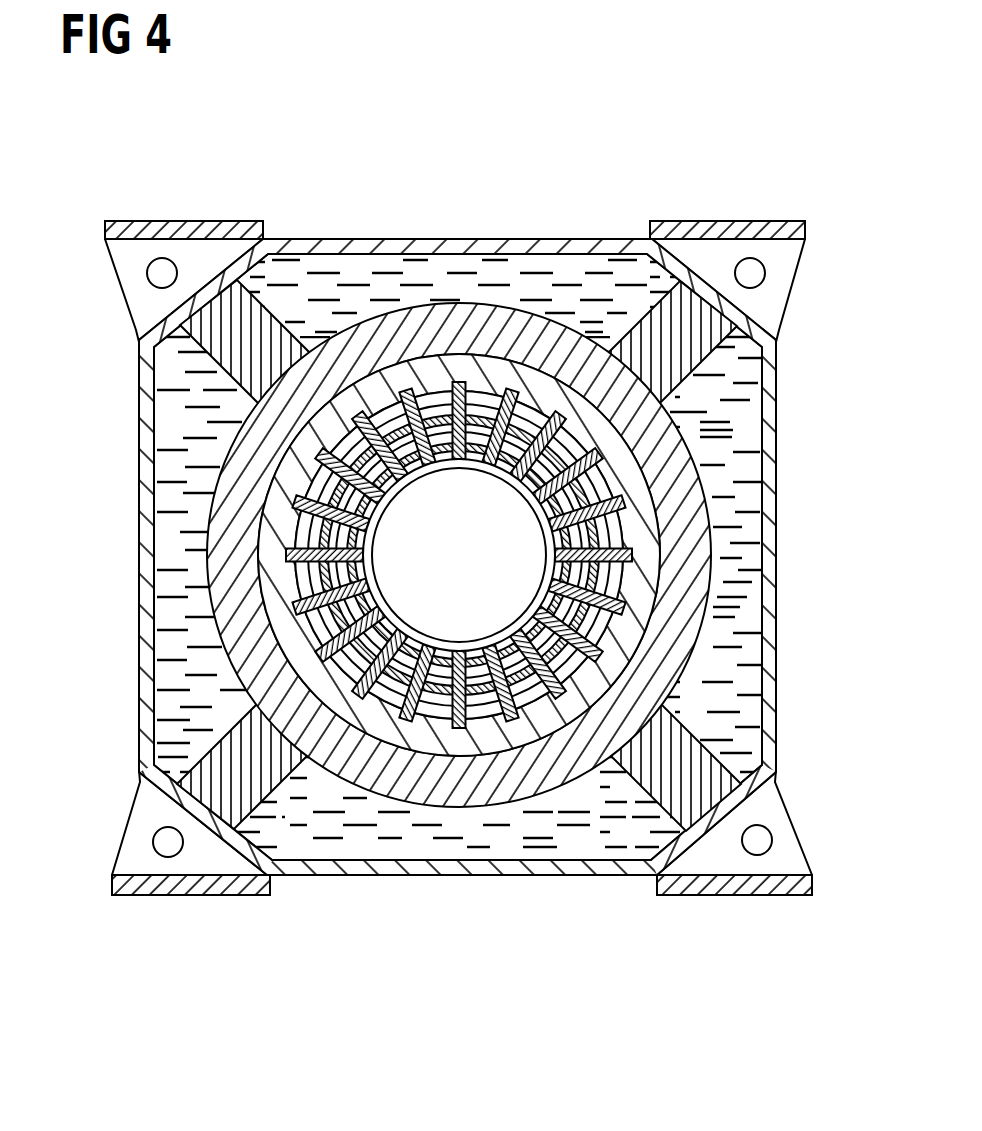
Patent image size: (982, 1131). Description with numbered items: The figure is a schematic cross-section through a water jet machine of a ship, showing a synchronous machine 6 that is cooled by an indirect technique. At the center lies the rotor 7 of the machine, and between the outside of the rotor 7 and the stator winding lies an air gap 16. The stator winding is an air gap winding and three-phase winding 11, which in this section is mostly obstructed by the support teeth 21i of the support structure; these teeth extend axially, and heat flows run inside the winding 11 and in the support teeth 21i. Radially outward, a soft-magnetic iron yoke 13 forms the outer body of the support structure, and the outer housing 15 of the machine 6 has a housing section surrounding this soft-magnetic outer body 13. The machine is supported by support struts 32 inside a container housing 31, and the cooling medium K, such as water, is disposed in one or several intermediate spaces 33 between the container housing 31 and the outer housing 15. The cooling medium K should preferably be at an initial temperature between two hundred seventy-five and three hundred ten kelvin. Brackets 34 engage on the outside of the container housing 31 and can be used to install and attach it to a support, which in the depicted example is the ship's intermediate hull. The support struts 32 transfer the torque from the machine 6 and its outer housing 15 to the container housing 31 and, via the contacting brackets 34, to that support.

The synchronous machine 6 is at (740, 592).
The rotor 7 is at (302, 550).
The air gap winding and three-phase winding 11 is at (459, 669).
The soft-magnetic iron yoke 13 is at (459, 650).
The outer housing 15 is at (459, 625).
The air gap 16 is at (318, 555).
The support teeth 21i is at (459, 664).
The container housing 31 is at (430, 252).
The support struts 32 is at (700, 352).
The intermediate spaces 33 is at (175, 597).
The brackets 34 is at (772, 302).
The cooling medium K is at (567, 272).